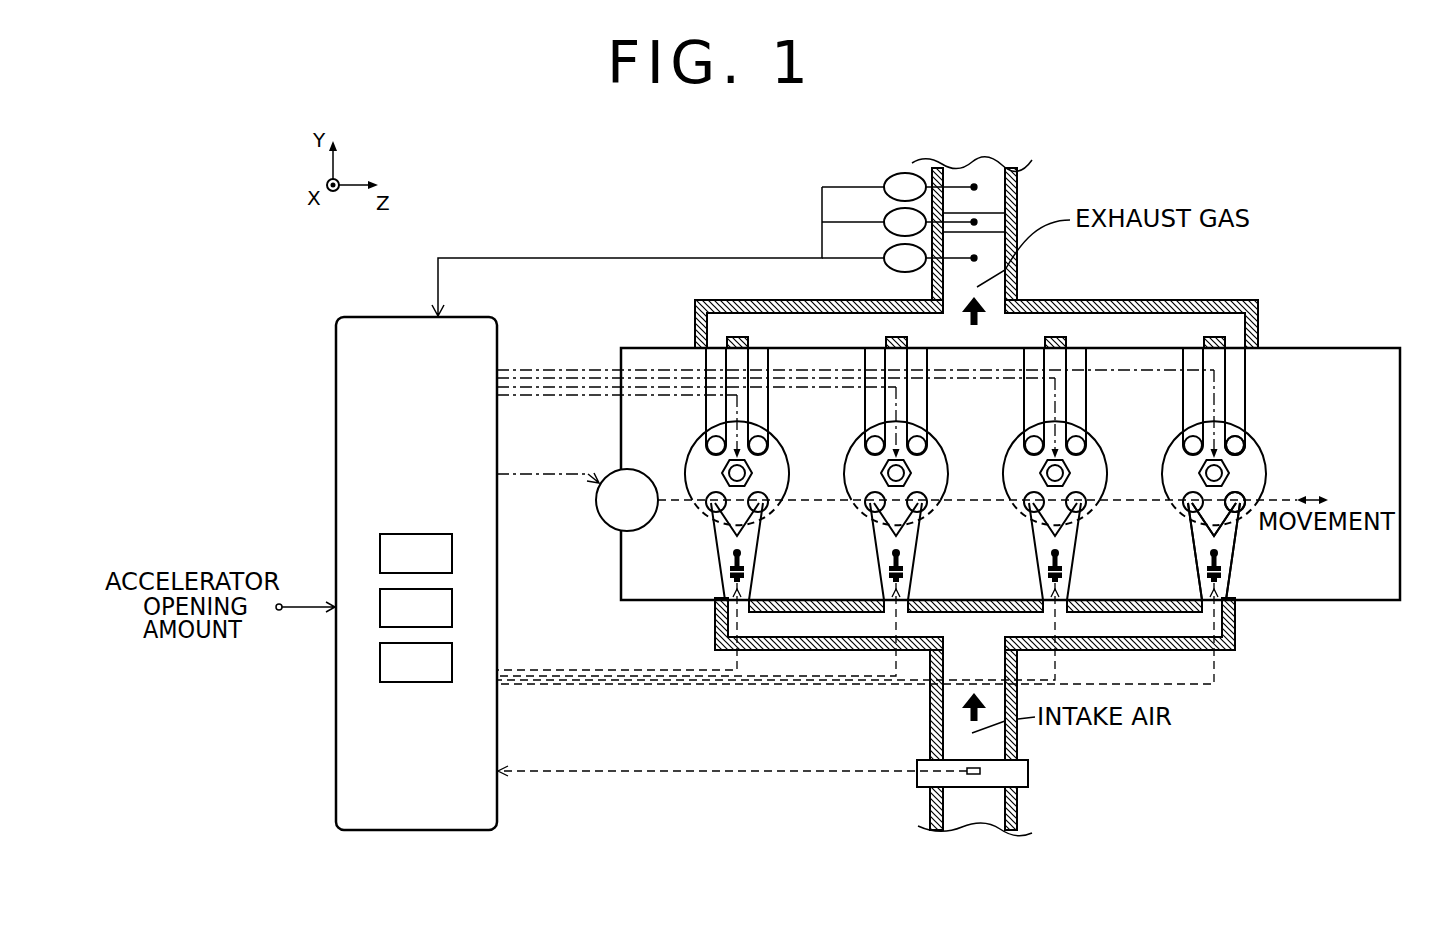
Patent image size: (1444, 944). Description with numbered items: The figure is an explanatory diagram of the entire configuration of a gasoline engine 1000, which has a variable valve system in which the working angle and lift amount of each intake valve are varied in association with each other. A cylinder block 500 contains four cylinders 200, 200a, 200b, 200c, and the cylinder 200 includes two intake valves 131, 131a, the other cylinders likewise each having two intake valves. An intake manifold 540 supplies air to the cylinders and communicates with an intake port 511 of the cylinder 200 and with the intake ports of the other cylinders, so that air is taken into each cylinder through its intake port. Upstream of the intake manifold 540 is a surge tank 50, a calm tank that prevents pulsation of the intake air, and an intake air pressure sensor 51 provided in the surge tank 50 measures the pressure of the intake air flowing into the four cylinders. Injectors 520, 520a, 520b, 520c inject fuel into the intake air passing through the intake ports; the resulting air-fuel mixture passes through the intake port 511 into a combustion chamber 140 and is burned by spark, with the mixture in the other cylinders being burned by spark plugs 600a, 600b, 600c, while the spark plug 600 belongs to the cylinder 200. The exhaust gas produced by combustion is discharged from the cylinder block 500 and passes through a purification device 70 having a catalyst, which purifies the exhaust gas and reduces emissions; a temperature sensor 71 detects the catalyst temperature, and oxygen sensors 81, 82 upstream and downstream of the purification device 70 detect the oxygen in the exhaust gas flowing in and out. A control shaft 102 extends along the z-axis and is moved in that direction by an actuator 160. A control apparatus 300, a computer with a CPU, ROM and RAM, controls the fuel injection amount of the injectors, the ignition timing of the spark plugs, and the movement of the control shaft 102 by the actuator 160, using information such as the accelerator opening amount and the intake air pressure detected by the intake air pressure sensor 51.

The gasoline engine 1000 is at (473, 171).
The oxygen sensor 81 is at (890, 177).
The temperature sensor 71 is at (888, 214).
The oxygen sensor 82 is at (889, 252).
The purification device 70 is at (1017, 205).
The spark plug 600 is at (1088, 300).
The cylinder block 500 is at (1300, 348).
The control apparatus 300 is at (336, 520).
The cylinder 200c is at (687, 455).
The cylinder 200b is at (845, 455).
The cylinder 200a is at (1012, 442).
The cylinder 200 is at (1173, 438).
The combustion chamber 140 is at (1258, 450).
The intake valve 131 is at (1244, 489).
The intake valve 131a is at (1198, 522).
The spark plug 600c is at (722, 473).
The spark plug 600b is at (881, 473).
The spark plug 600a is at (1040, 473).
The control shaft 102 is at (680, 503).
The actuator 160 is at (605, 525).
The injector 520c is at (729, 572).
The injector 520b is at (888, 574).
The injector 520a is at (1047, 575).
The injector 520 is at (1206, 575).
The intake manifold 540 is at (716, 626).
The intake port 511 is at (1222, 537).
The intake air pressure sensor 51 is at (983, 771).
The surge tank 50 is at (1030, 785).